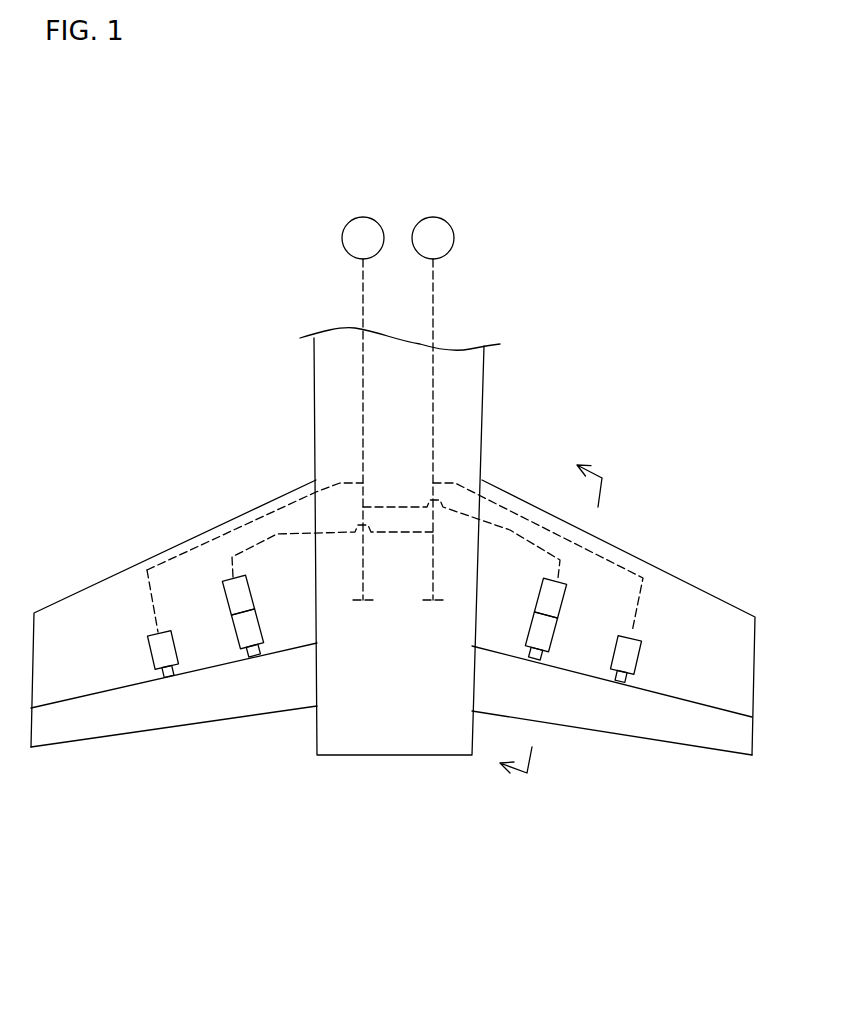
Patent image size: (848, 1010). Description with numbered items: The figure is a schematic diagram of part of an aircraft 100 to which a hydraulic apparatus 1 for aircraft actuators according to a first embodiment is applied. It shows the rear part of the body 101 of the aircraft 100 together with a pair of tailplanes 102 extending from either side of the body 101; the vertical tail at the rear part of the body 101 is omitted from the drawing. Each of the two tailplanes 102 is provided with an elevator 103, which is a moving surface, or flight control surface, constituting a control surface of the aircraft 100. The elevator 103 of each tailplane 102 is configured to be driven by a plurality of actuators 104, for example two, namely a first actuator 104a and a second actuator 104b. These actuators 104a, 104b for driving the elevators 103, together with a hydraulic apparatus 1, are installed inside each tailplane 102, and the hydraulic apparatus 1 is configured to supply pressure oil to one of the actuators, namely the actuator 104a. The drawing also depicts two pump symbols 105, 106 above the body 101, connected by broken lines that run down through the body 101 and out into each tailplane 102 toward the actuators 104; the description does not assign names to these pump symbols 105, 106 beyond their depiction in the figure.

The hydraulic apparatus 1 is at (227, 600).
The aircraft 100 is at (500, 382).
The body 101 is at (467, 438).
The tailplane 102 is at (123, 597).
The elevator 103 is at (148, 718).
The actuator 104 is at (392, 652).
The actuator 104a is at (232, 642).
The actuator 104b is at (699, 446).
The first hydraulic pump 105 is at (342, 241).
The second hydraulic pump 106 is at (455, 235).